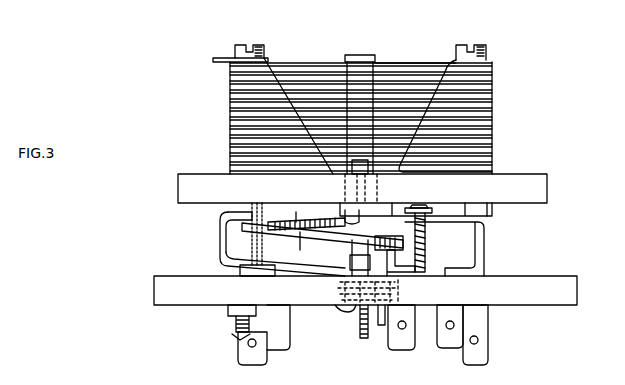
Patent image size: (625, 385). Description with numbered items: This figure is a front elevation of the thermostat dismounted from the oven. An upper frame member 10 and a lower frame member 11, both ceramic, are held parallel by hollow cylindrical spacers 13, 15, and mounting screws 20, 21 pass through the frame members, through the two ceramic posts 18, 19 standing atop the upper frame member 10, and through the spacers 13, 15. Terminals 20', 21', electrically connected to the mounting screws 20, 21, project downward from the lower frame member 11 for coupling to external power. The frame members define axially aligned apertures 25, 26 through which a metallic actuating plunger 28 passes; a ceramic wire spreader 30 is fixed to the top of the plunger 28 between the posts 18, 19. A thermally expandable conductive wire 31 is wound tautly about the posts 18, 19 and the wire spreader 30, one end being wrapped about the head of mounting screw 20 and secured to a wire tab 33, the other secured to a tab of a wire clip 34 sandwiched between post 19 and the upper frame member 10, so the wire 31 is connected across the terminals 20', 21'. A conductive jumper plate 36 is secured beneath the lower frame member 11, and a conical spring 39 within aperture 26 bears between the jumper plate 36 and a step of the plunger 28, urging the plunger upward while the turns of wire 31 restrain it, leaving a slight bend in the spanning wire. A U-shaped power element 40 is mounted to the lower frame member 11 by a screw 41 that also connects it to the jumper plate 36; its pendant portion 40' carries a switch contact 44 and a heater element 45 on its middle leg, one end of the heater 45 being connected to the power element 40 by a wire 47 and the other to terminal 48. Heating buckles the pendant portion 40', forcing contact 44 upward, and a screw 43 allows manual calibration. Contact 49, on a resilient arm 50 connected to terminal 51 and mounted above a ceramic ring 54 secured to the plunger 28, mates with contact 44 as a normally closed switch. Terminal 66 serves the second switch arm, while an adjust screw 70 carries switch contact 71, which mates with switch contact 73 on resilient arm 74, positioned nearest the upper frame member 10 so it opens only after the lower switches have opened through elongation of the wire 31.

The upper frame member 10 is at (178, 189).
The lower frame member 11 is at (154, 290).
The hollow cylindrical spacer 13 is at (240, 248).
The hollow cylindrical spacer 15 is at (495, 209).
The ceramic post 18 is at (230, 94).
The ceramic post 19 is at (494, 135).
The mounting screw 20 is at (249, 34).
The terminal 20' is at (227, 348).
The mounting screw 21 is at (478, 34).
The terminal 21' is at (496, 335).
The aperture 25 is at (380, 188).
The aperture 26 is at (332, 289).
The actuating plunger 28 is at (355, 188).
The wire spreader 30 is at (362, 55).
The thermally expandable wire 31 is at (409, 63).
The wire tab 33 is at (222, 57).
The wire clip 34 is at (433, 80).
The jumper plate 36 is at (382, 325).
The conical spring 39 is at (400, 285).
The power element 40 is at (254, 244).
The pendant portion 40' is at (288, 232).
The screw 41 is at (342, 305).
The screw 43 is at (236, 325).
The switch contact 44 is at (345, 238).
The heater element 45 is at (283, 222).
The wire 47 is at (222, 214).
The terminal 48 is at (414, 325).
The contact 49 is at (356, 216).
The resilient arm 50 is at (452, 250).
The terminal 51 is at (463, 319).
The ceramic ring 54 is at (318, 240).
The terminal 66 is at (278, 335).
The adjust screw 70 is at (427, 247).
The switch contact 71 is at (432, 213).
The switch contact 73 is at (432, 210).
The resilient arm 74 is at (412, 209).